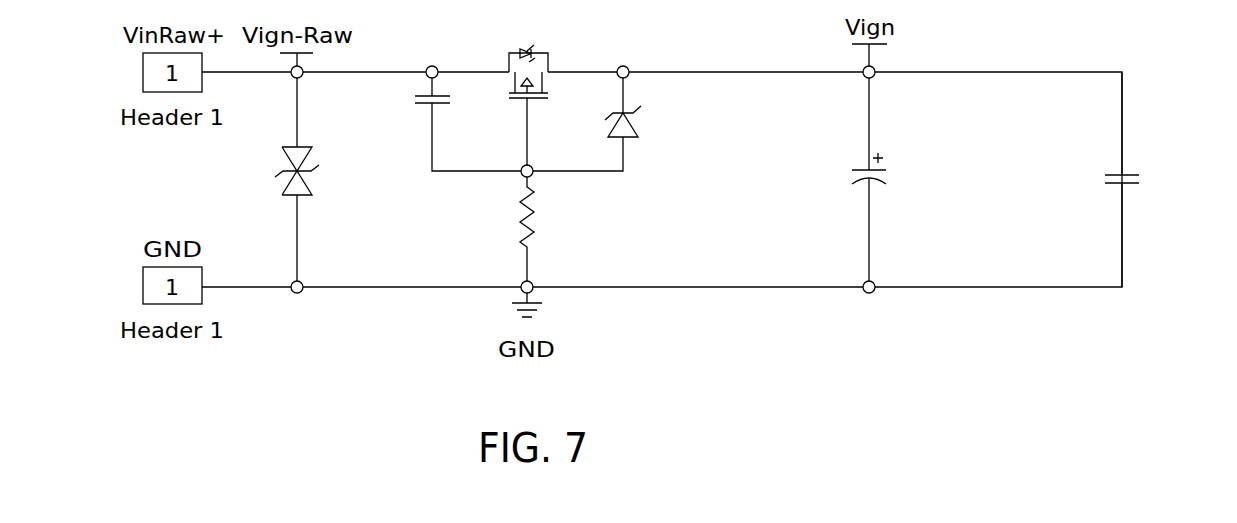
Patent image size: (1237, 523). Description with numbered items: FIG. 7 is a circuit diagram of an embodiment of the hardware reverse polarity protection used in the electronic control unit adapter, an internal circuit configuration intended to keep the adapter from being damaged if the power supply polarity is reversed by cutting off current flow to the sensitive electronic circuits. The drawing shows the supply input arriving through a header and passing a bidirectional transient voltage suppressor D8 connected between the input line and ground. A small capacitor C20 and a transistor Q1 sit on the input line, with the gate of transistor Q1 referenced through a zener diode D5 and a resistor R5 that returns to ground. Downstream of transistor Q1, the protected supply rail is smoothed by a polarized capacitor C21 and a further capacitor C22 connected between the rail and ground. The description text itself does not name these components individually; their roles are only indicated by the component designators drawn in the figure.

The bidirectional TVS diode SMCJ40CALFCT-ND D8 is at (188, 179).
The capacitor 0.01uF C20 is at (423, 124).
The MOSFET FDMS86163PCT-ND Q1 is at (648, 109).
The zener diode MMSZ5240BTIG D5 is at (687, 124).
The resistor 10k R5 is at (506, 229).
The electrolytic capacitor 100uF 50V PCE5024CT-ND C21 is at (961, 179).
The capacitor 0.1uF C22 is at (1149, 179).